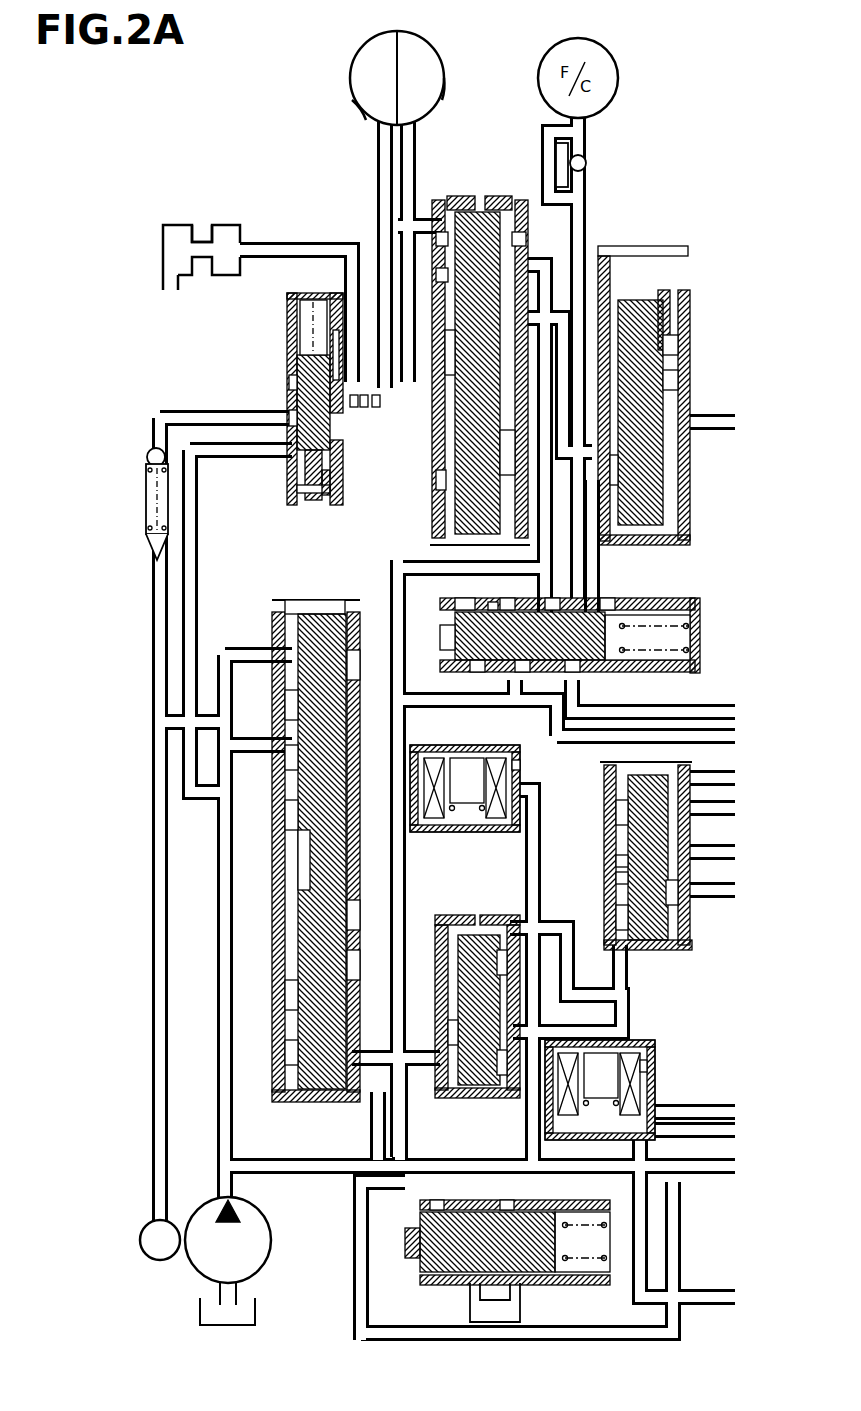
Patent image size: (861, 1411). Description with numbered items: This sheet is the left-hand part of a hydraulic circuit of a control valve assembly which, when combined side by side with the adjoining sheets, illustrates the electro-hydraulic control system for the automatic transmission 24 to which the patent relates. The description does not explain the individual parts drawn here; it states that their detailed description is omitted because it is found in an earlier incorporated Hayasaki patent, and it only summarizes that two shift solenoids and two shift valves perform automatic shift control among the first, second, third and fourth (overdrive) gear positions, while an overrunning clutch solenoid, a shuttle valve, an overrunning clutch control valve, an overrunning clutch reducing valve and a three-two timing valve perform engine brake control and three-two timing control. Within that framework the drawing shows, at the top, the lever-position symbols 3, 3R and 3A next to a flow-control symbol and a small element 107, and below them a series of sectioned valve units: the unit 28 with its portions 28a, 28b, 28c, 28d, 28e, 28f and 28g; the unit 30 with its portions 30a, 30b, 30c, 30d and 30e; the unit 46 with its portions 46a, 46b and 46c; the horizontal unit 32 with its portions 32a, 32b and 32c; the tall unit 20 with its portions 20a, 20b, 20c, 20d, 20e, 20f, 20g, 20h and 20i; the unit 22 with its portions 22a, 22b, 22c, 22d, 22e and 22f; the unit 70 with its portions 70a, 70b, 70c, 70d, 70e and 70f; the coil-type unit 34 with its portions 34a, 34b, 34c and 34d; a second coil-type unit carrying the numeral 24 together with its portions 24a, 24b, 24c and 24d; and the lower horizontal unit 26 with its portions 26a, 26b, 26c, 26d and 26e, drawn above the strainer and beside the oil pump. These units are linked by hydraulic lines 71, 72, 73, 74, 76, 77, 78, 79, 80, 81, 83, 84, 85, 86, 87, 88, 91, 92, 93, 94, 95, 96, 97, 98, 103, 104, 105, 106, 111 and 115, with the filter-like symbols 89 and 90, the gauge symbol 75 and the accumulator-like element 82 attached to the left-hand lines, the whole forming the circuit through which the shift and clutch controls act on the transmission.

The shift lever 3 is at (353, 60).
The reverse position 3R is at (351, 103).
The automatic position 3A is at (445, 97).
The shift valve 20 is at (304, 827).
The spool 20a is at (296, 890).
The valve top plug 20b is at (285, 606).
The port 20c is at (288, 986).
The port 20d is at (340, 660).
The port 20e is at (288, 795).
The port 20f is at (288, 730).
The port 20g is at (288, 694).
The land 20h is at (296, 838).
The port 20i is at (352, 958).
The shift valve 22 is at (437, 1008).
The valve plug 22a is at (488, 916).
The valve plug 22b is at (455, 916).
The port 22c is at (470, 986).
The port 22d is at (452, 1066).
The spool 22e is at (462, 962).
The port 22f is at (497, 1078).
The automatic transmission 24 is at (626, 1074).
The solenoid coil 24a is at (655, 1090).
The plunger 24b is at (600, 1079).
The port 24c is at (655, 1074).
The drain line 24d is at (632, 1126).
The valve 26 is at (499, 1248).
The spring chamber 26a is at (586, 1212).
The spool 26b is at (532, 1216).
The port 26c is at (410, 1262).
The port 26d is at (508, 1204).
The port 26e is at (436, 1202).
The manual valve 28 is at (298, 402).
The valve chamber 28a is at (292, 296).
The spool 28b is at (297, 358).
The port 28c is at (289, 413).
The valve stem 28d is at (297, 458).
The port 28e is at (289, 378).
The port 28f is at (300, 494).
The port 28g is at (353, 489).
The select valve 30 is at (473, 345).
The port 30a is at (432, 512).
The port 30b is at (520, 244).
The port 30c is at (436, 486).
The valve end 30d is at (432, 541).
The valve end plug 30e is at (470, 196).
The regulator valve 32 is at (561, 632).
The spring 32a is at (670, 665).
The spool 32b is at (458, 620).
The port 32c is at (452, 630).
The solenoid valve 34 is at (453, 812).
The solenoid coil 34a is at (512, 776).
The plunger 34b is at (466, 794).
The port 34c is at (514, 762).
The solenoid coil 34d is at (445, 826).
The valve 46 is at (646, 363).
The spool 46a is at (640, 538).
The land 46b is at (672, 297).
The port 46c is at (598, 466).
The valve 70 is at (637, 854).
The spool 70a is at (610, 776).
The port 70b is at (614, 811).
The port 70c is at (612, 926).
The port 70d is at (612, 860).
The port 70e is at (612, 877).
The port 70f is at (668, 792).
The line pressure passage 71 is at (218, 950).
The passage 72 is at (250, 648).
The passage 73 is at (165, 710).
The passage 74 is at (168, 994).
The pressure gauge 75 is at (170, 1218).
The passage 76 is at (355, 1126).
The passage 77 is at (365, 1130).
The passage 78 is at (555, 822).
The passage 79 is at (398, 918).
The passage 80 is at (576, 1038).
The passage 81 is at (626, 990).
The accumulator 82 is at (150, 414).
The port 83 is at (363, 410).
The passage 84 is at (183, 612).
The passage 85 is at (372, 378).
The port 86 is at (378, 410).
The port 87 is at (356, 410).
The passage 88 is at (318, 243).
The filter 89 is at (242, 237).
The filter 90 is at (163, 237).
The passage 91 is at (378, 184).
The passage 92 is at (430, 218).
The passage 93 is at (420, 138).
The passage 94 is at (530, 262).
The port 95 is at (520, 598).
The passage 96 is at (599, 572).
The passage 97 is at (570, 737).
The passage 98 is at (477, 858).
The passage 103 is at (590, 330).
The port 104 is at (662, 382).
The port 105 is at (640, 347).
The passage 106 is at (722, 432).
The check valve 107 is at (597, 163).
The passage 111 is at (706, 870).
The passage 115 is at (642, 704).